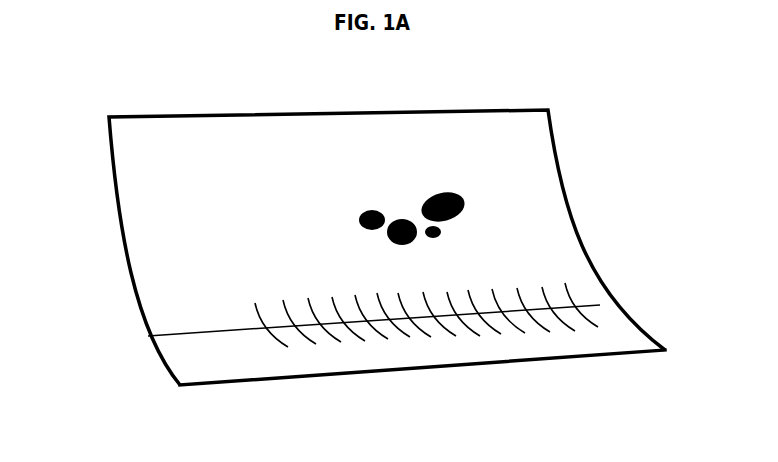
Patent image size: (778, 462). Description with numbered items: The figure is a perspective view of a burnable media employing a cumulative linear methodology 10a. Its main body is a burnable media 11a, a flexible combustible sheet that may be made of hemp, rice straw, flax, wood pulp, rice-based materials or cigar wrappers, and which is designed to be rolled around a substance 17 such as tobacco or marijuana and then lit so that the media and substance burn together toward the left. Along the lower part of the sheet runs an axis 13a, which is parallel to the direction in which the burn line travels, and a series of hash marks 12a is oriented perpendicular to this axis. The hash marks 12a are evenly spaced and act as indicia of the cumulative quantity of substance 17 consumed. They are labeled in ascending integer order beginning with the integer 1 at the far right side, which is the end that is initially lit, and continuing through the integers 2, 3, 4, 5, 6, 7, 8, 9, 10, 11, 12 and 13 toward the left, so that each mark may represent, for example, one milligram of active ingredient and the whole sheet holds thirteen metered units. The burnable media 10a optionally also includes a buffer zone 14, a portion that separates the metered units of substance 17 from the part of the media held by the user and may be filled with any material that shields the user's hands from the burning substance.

The burnable media employing a cumulative linear methodology 10a is at (598, 187).
The burnable media 11a is at (213, 355).
The hash marks 12a is at (383, 340).
The axis 13a is at (172, 330).
The buffer zone 14 is at (282, 322).
The substance 17 is at (455, 182).
The integer label 1 is at (576, 292).
The integer label 2 is at (553, 295).
The integer label 3 is at (529, 296).
The integer label 4 is at (503, 298).
The integer label 5 is at (480, 300).
The integer label 6 is at (458, 302).
The integer label 7 is at (435, 303).
The integer label 8 is at (411, 304).
The integer label 9 is at (389, 305).
The integer label 10 is at (365, 307).
The integer label 11 is at (341, 309).
The integer label 12 is at (318, 310).
The integer label 13 is at (294, 312).